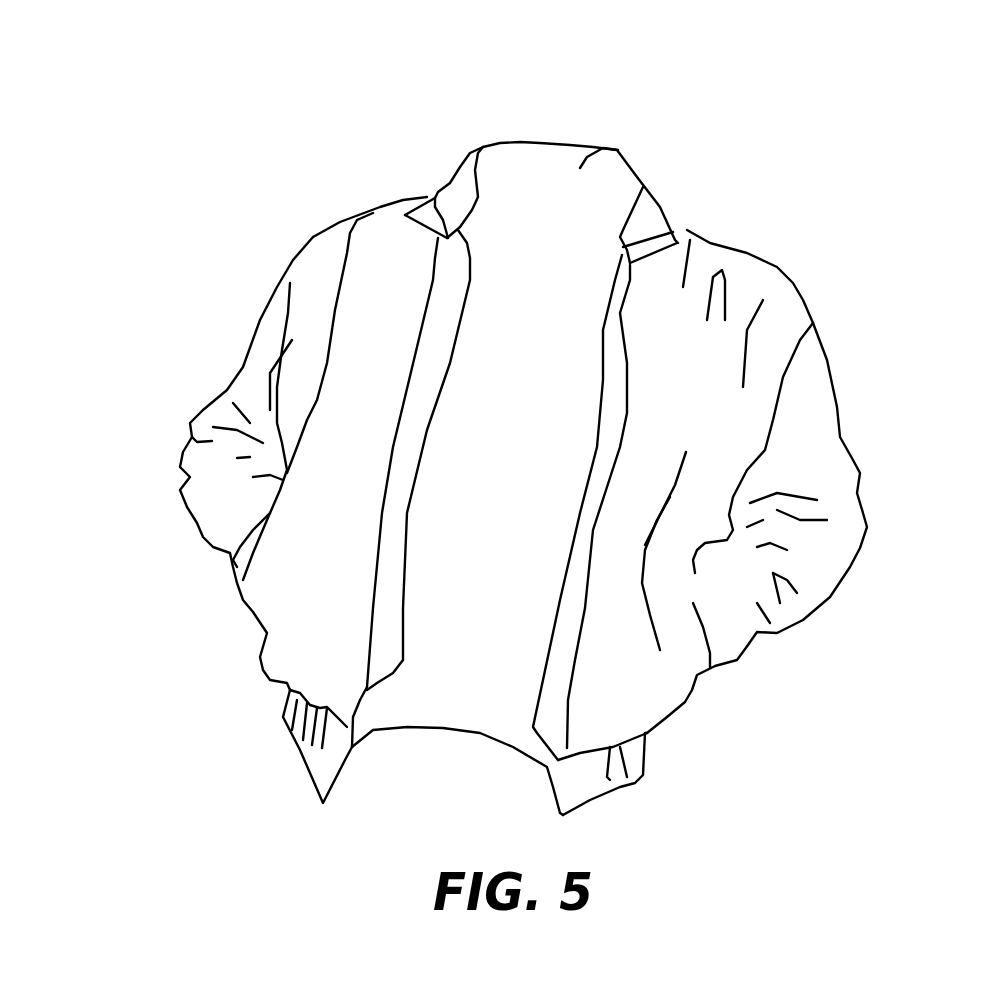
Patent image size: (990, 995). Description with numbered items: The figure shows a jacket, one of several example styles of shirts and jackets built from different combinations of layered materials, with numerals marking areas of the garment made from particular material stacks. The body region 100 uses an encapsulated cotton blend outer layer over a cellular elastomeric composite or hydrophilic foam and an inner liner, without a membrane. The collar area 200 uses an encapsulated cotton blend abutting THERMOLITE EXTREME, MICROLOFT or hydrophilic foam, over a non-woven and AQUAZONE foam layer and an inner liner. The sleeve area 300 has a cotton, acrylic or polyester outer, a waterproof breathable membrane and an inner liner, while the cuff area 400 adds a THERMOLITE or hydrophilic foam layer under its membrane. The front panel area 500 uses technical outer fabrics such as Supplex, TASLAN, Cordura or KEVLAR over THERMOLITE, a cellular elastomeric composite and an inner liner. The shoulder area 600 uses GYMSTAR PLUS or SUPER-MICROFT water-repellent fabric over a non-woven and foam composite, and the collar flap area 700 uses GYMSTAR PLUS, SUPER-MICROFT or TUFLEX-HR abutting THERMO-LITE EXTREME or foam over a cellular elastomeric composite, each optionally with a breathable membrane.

The apparel area of encapsulated cotton blend with foam and inner liner 100 is at (550, 438).
The apparel area of encapsulated cotton blend with insulation, non-woven foam and in 200 is at (647, 202).
The apparel area of cotton/acrylic/polyester with waterproof breathable membrane and 300 is at (795, 486).
The apparel area of cotton/acrylic/polyester blend with membrane, THERMOLITE or foam 400 is at (661, 774).
The apparel area of technical outer fabric with THERMOLITE, cellular elastomeric com 500 is at (282, 708).
The apparel area of water-repellent fabric with non-woven foam composite and inner l 600 is at (237, 463).
The apparel area of water-repellent fabric abutting insulation with cellular elastom 700 is at (414, 160).